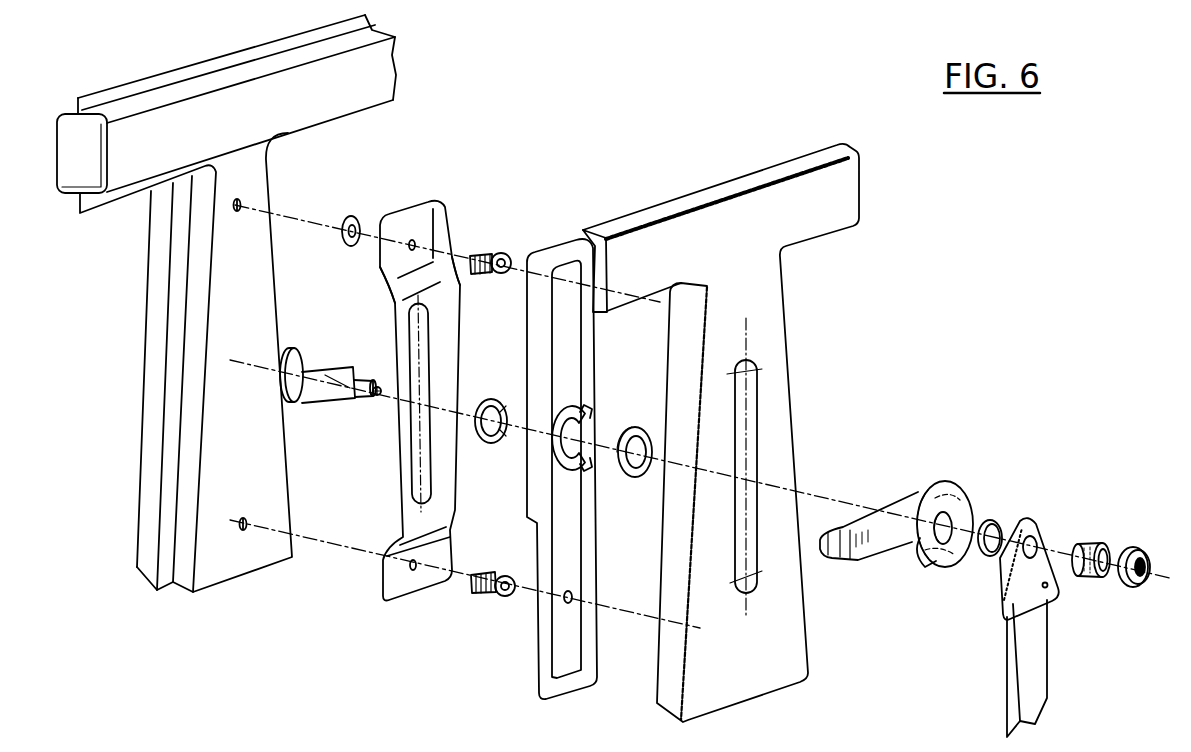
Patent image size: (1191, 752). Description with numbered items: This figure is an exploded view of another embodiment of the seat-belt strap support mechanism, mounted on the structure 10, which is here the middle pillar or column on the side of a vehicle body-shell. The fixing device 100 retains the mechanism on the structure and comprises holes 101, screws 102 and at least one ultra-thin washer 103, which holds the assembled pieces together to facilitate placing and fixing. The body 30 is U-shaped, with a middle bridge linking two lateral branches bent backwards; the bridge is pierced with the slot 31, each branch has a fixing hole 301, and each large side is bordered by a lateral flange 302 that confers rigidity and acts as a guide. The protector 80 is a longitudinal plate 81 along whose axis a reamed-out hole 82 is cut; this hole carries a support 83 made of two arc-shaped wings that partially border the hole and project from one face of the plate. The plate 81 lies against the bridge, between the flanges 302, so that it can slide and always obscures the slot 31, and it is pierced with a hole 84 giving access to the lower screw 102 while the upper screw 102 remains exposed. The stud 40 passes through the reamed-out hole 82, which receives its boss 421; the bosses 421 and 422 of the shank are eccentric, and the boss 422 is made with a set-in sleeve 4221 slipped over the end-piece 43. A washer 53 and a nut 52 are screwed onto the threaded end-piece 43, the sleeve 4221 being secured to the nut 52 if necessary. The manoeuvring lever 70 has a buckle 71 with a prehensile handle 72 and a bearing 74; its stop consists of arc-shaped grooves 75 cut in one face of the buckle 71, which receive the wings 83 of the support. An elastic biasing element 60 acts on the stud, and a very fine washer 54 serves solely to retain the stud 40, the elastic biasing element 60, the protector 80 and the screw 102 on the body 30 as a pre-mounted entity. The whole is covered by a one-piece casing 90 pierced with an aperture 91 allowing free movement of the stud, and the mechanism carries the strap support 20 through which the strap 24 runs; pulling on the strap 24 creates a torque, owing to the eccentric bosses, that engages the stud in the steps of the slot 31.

The structure 10 is at (182, 132).
The fixing device 100 is at (337, 143).
The holes 101 is at (243, 205).
The screws 102 is at (478, 250).
The washer 103 is at (360, 221).
The strap support 20 is at (1020, 627).
The strap 24 is at (1033, 667).
The body 30 is at (400, 412).
The fixing hole 301 is at (408, 247).
The lateral flange 302 is at (397, 313).
The slot 31 is at (413, 493).
The stud 40 is at (331, 390).
The boss 421 is at (318, 400).
The boss 422 is at (345, 400).
The end-piece 43 is at (365, 388).
The set-in sleeve 4221 is at (1087, 544).
The nut 52 is at (1143, 557).
The washer 53 is at (995, 525).
The washer 54 is at (634, 452).
The elastic biasing element 60 is at (498, 443).
The manoeuvring lever 70 is at (909, 527).
The buckle 71 is at (948, 562).
The prehensile handle 72 is at (826, 548).
The bearing 74 is at (950, 517).
The grooves 75 is at (927, 563).
The protector 80 is at (552, 469).
The longitudinal plate 81 is at (550, 314).
The reamed-out hole 82 is at (599, 428).
The support 83 is at (588, 394).
The hole 84 is at (572, 600).
The casing 90 is at (721, 411).
The aperture 91 is at (750, 410).